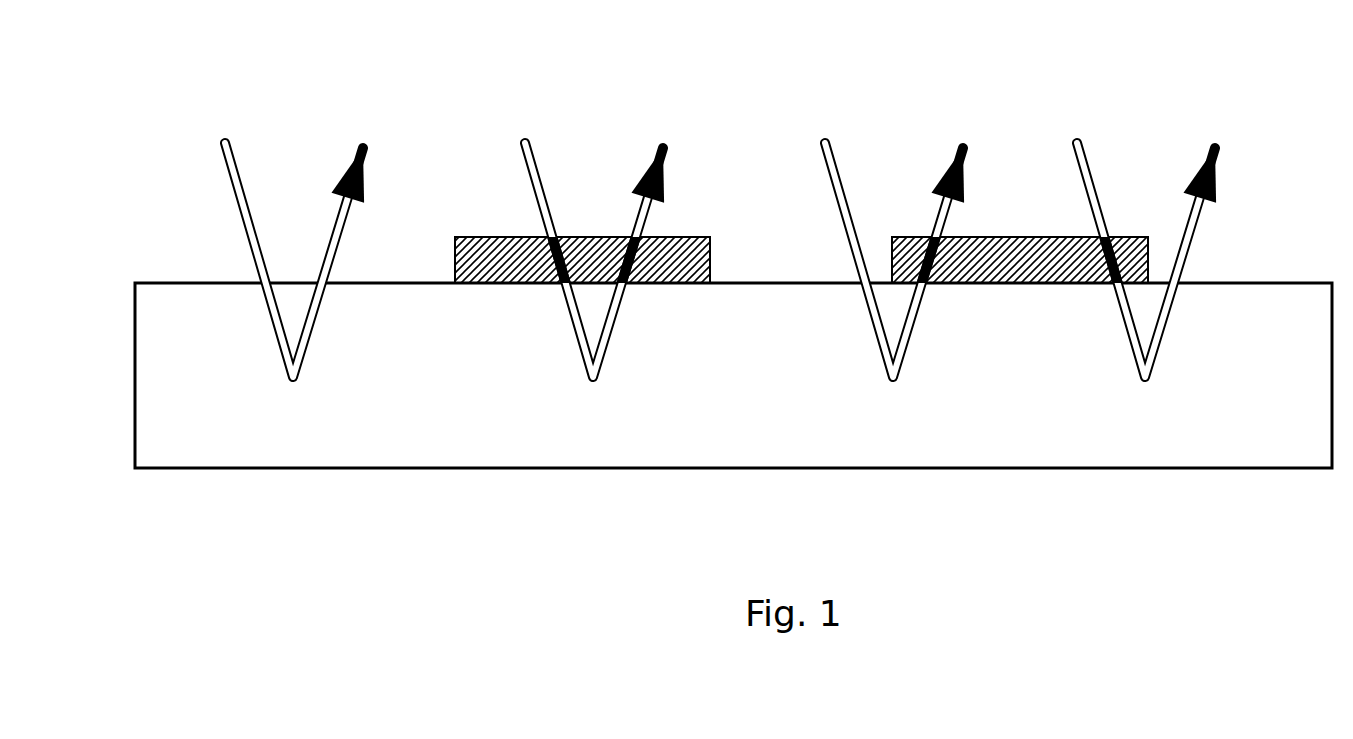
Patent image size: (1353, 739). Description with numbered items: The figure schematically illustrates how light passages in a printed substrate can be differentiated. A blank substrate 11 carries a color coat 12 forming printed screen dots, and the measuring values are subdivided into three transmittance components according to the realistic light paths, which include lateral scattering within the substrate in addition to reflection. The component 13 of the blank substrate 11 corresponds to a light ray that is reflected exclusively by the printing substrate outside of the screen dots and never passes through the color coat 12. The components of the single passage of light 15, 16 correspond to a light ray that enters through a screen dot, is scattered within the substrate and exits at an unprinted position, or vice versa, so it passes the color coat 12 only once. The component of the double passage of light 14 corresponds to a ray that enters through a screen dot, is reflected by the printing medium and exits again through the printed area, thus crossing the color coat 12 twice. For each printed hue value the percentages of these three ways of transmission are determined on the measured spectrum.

The blank substrate 11 is at (1256, 266).
The color coat 12 is at (708, 229).
The component of the blank substrate 13 is at (378, 160).
The double passage of light 14 is at (558, 160).
The single passage of light 15 is at (855, 160).
The single passage of light 16 is at (1108, 160).